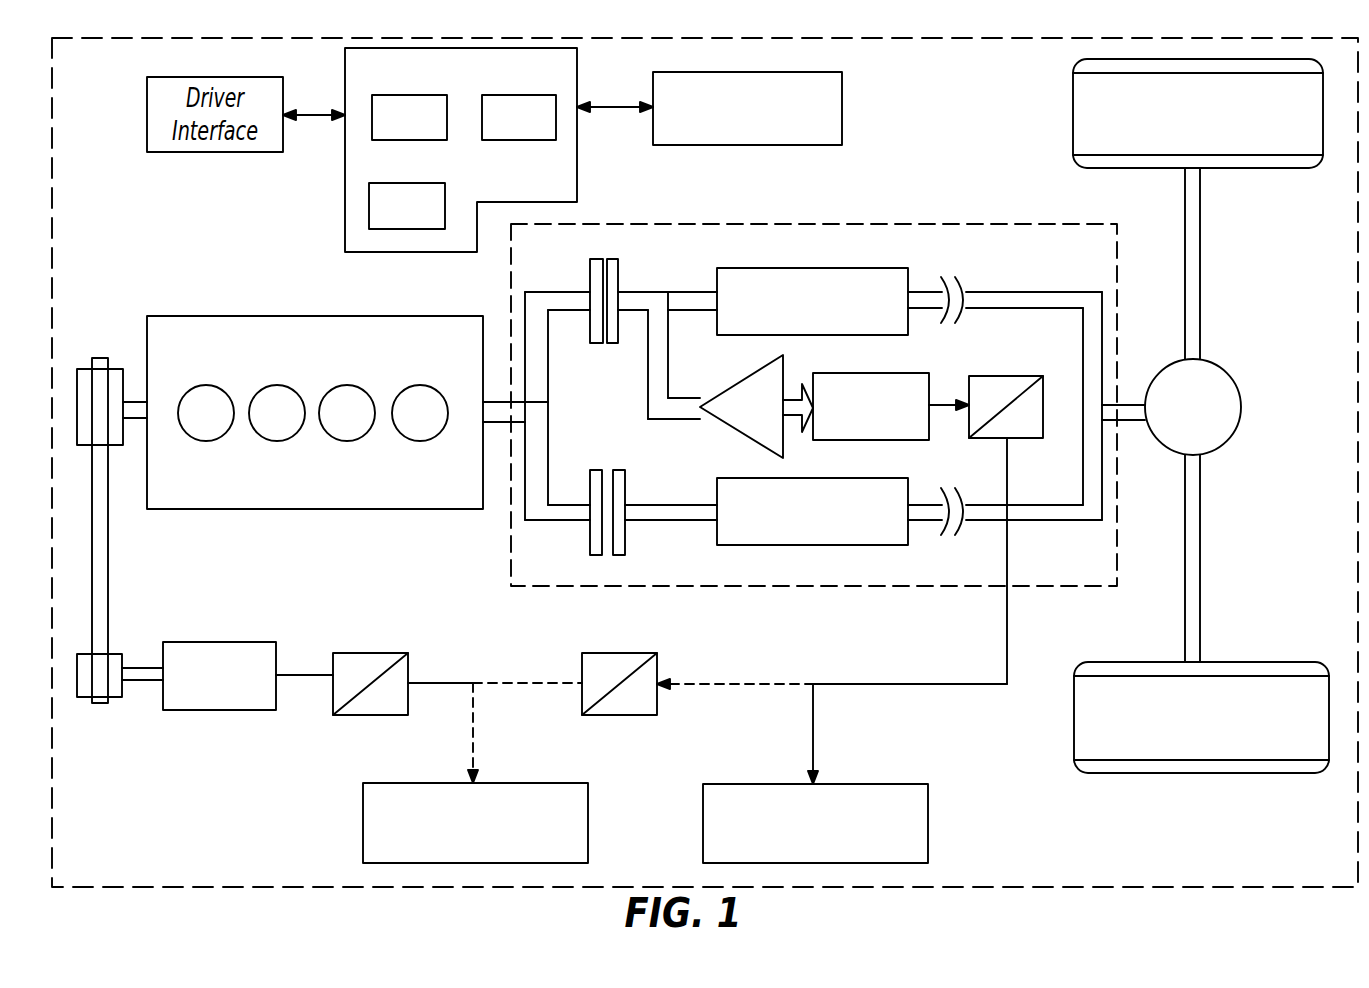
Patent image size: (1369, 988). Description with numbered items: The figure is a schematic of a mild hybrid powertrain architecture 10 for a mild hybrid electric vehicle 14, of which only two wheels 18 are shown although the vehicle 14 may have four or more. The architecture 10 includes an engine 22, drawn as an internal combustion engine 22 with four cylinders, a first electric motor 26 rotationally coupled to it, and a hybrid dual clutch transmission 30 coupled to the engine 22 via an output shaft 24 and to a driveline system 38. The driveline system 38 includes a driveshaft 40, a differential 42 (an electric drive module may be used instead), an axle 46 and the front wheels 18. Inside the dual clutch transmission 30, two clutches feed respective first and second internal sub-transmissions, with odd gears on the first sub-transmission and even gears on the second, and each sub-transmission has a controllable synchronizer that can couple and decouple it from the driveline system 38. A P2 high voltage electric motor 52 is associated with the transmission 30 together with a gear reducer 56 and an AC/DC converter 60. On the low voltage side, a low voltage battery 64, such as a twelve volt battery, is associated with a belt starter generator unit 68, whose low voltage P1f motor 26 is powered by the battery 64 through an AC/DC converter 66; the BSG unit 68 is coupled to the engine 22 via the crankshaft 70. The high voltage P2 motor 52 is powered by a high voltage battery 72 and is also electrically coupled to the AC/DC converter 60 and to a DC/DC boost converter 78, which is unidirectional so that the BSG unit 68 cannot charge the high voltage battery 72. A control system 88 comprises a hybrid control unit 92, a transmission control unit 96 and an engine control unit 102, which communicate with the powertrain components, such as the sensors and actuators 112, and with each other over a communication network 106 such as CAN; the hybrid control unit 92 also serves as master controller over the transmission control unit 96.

The mild hybrid powertrain architecture 10 is at (874, 58).
The mild hybrid electric vehicle 14 is at (258, 890).
The wheels 18 is at (1323, 130).
The engine 22 is at (433, 316).
The engine output shaft 24 is at (493, 424).
The first electric motor 26 is at (245, 710).
The hybrid dual clutch transmission 30 is at (1038, 222).
The driveline system 38 is at (1156, 343).
The driveshaft 40 is at (1127, 425).
The differential 42 is at (1232, 372).
The axle 46 is at (1201, 228).
The high voltage electric motor 52 is at (893, 373).
The gear reducer 56 is at (747, 437).
The AC/DC converter 60 is at (1022, 376).
The low voltage battery 64 is at (363, 815).
The AC/DC converter 66 is at (383, 653).
The belt starter generator unit 68 is at (209, 636).
The crankshaft 70 is at (141, 402).
The high voltage battery 72 is at (928, 800).
The DC/DC boost converter 78 is at (640, 653).
The control system 88 is at (584, 69).
The hybrid control unit 92 is at (372, 110).
The transmission control unit 96 is at (518, 140).
The engine control unit 102 is at (369, 210).
The communication network 106 is at (310, 117).
The sensors and actuators 112 is at (842, 140).